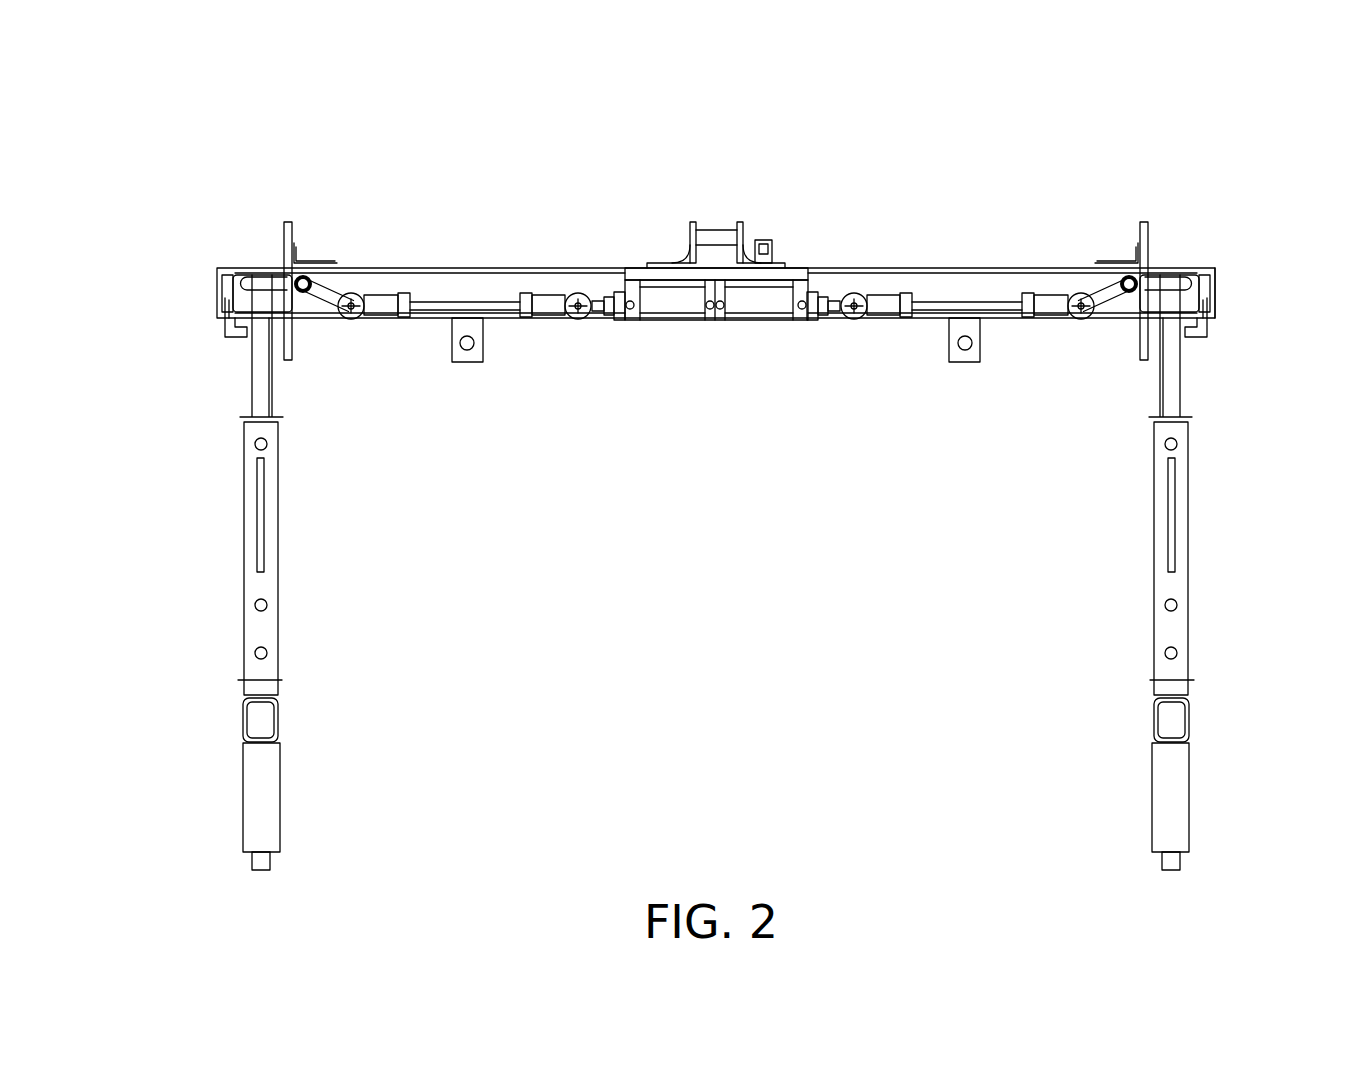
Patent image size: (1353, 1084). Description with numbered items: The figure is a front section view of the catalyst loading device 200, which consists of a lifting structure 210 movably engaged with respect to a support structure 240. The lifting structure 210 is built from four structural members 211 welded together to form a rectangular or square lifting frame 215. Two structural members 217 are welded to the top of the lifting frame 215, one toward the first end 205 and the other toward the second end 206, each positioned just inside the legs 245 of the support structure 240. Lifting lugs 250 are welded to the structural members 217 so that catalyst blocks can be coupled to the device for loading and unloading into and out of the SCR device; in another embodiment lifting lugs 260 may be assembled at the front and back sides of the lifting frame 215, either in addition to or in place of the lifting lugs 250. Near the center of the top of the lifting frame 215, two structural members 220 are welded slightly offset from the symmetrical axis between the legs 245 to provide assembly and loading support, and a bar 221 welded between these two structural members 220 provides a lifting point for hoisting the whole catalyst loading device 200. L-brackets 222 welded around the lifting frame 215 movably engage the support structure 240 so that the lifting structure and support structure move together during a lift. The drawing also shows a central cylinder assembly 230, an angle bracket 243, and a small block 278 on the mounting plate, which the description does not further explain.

The catalyst loading device 200 is at (932, 120).
The first end 205 is at (217, 290).
The second end 206 is at (1220, 290).
The lifting structure 210 is at (462, 268).
The structural members 211 is at (220, 270).
The lifting frame 215 is at (225, 273).
The structural members 217 is at (297, 266).
The structural members 220 is at (738, 232).
The bar 221 is at (717, 230).
The L-brackets 222 is at (240, 329).
The actuator cylinders 230 is at (762, 320).
The support structure 240 is at (243, 445).
The angle bracket 243 is at (258, 273).
The legs 245 is at (275, 383).
The lifting lugs 250 is at (253, 357).
The lifting lugs 260 is at (470, 360).
The stop block 278 is at (770, 250).